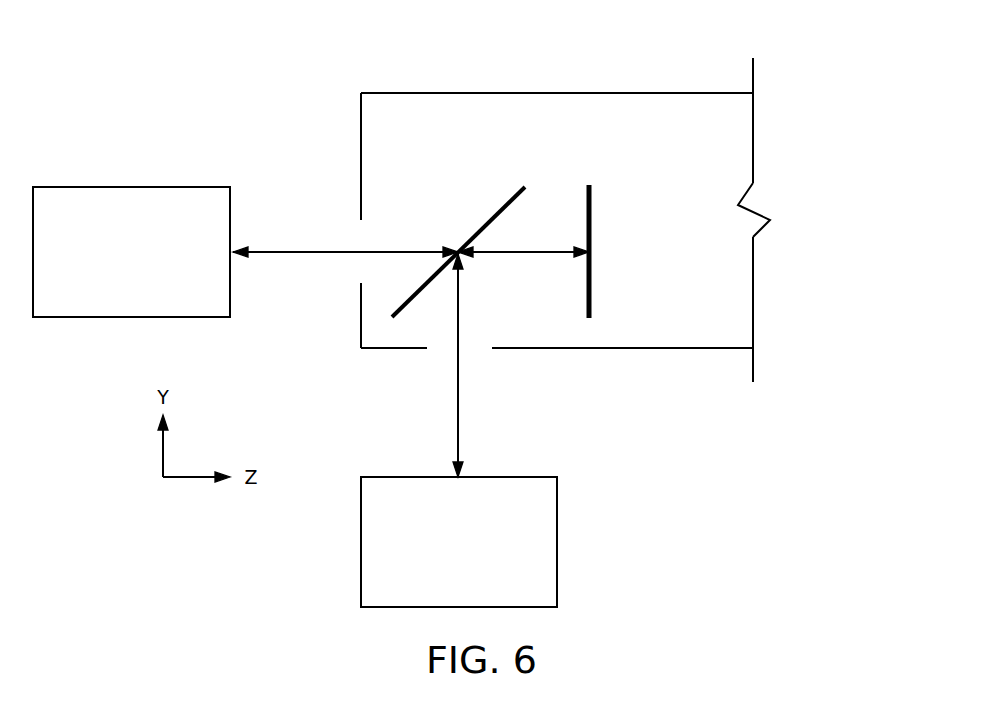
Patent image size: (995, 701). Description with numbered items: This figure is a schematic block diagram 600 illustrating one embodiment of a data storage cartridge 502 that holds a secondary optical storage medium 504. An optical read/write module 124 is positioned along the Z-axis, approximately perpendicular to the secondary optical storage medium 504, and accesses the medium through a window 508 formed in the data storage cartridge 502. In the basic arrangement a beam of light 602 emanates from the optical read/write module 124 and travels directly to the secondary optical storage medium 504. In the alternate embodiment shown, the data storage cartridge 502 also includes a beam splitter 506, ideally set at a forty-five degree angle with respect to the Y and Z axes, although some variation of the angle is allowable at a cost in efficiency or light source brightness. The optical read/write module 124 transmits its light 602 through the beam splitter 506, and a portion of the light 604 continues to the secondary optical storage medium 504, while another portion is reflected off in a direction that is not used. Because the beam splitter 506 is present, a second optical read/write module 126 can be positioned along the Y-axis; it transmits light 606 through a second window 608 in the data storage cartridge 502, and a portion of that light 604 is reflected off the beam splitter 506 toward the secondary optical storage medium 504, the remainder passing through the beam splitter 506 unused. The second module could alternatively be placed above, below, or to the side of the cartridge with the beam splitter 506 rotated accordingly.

The schematic block diagram 600 is at (157, 114).
The optical read/write module 124 is at (131, 252).
The optical read/write module 126 is at (459, 542).
The data storage cartridge 502 is at (648, 92).
The secondary optical storage medium 504 is at (591, 221).
The beam splitter 506 is at (510, 198).
The window 508 is at (346, 276).
The beam of light 602 is at (302, 251).
The portion of the light 604 is at (535, 253).
The light 606 is at (460, 398).
The second window 608 is at (439, 359).